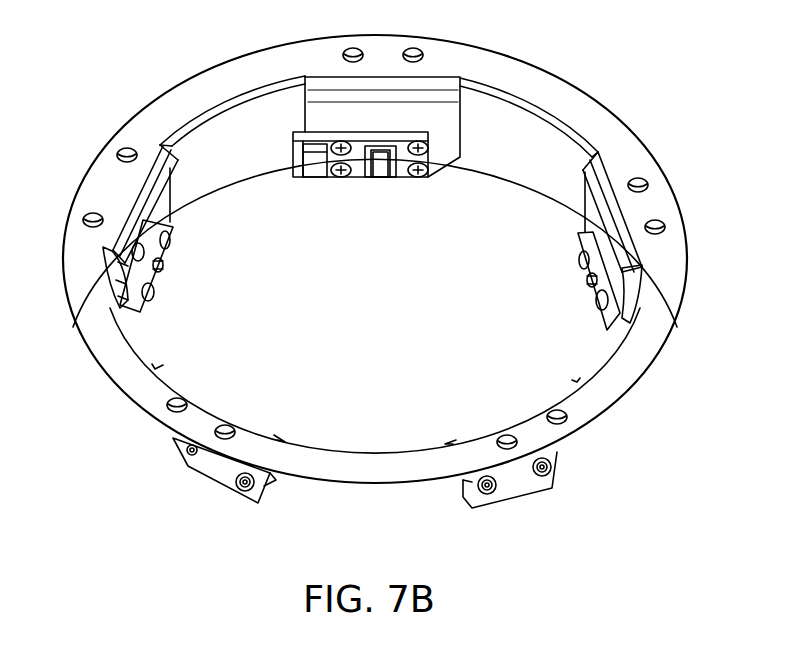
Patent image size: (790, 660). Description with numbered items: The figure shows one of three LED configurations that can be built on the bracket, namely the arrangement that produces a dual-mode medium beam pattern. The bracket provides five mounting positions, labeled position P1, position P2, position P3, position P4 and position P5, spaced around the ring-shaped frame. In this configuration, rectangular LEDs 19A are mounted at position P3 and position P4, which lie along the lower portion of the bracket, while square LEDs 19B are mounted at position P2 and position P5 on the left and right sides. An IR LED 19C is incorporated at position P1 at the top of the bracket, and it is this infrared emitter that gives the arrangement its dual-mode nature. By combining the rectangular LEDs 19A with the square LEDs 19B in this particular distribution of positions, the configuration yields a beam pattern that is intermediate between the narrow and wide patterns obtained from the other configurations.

The rectangular LED 19A is at (228, 398).
The square LED 19B is at (166, 266).
The IR LED 19C is at (385, 178).
The position P1 is at (376, 89).
The position P2 is at (588, 241).
The position P3 is at (518, 487).
The position P4 is at (224, 481).
The position P5 is at (160, 228).